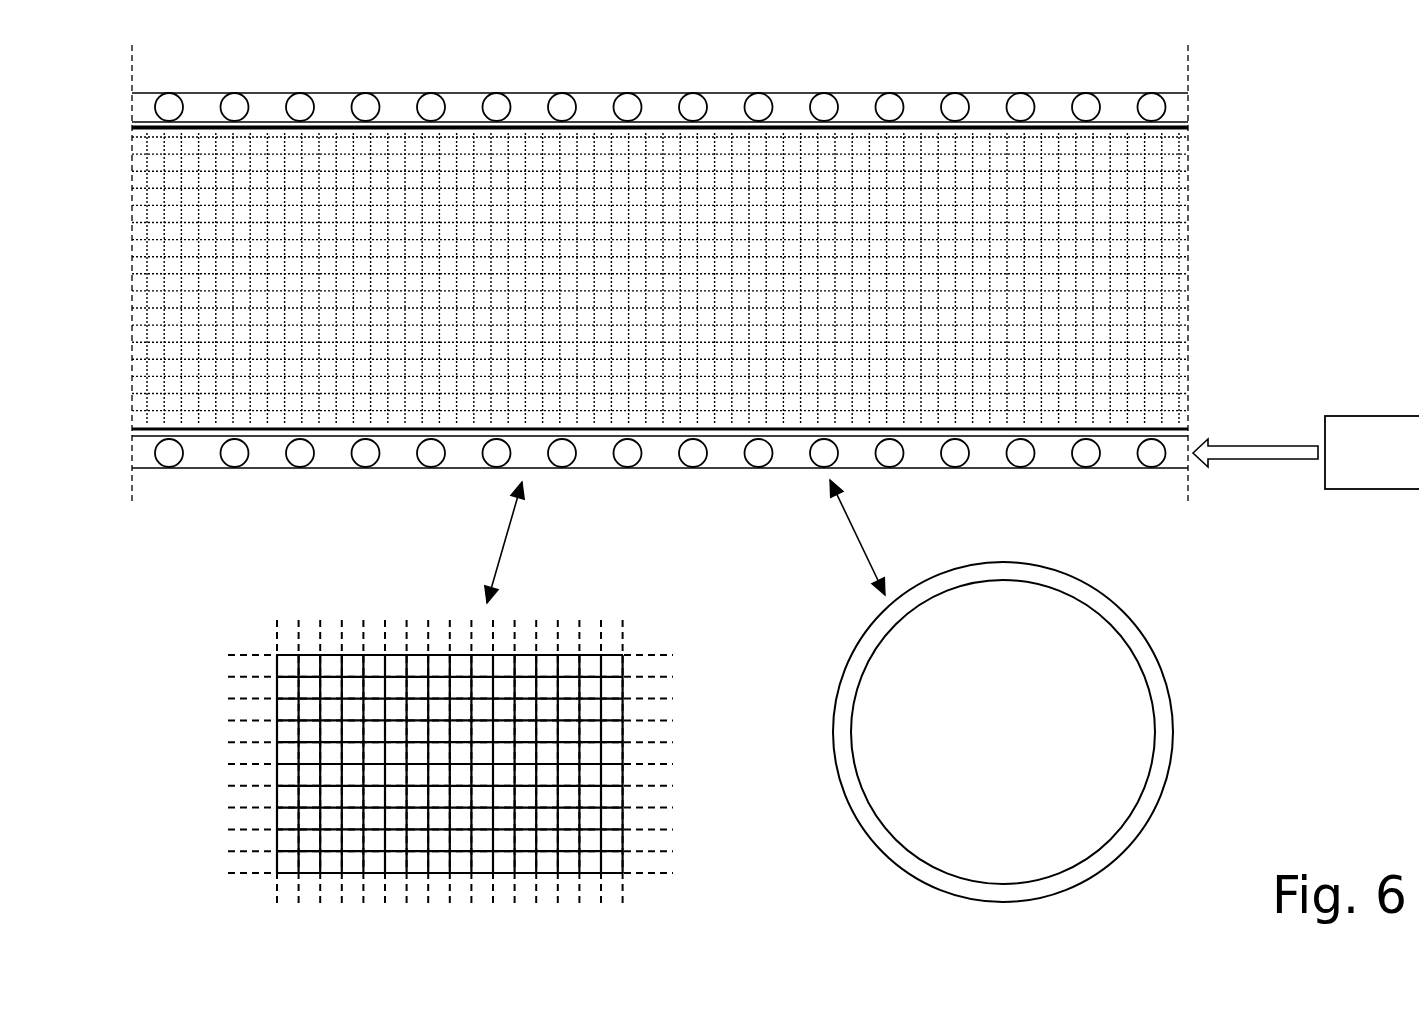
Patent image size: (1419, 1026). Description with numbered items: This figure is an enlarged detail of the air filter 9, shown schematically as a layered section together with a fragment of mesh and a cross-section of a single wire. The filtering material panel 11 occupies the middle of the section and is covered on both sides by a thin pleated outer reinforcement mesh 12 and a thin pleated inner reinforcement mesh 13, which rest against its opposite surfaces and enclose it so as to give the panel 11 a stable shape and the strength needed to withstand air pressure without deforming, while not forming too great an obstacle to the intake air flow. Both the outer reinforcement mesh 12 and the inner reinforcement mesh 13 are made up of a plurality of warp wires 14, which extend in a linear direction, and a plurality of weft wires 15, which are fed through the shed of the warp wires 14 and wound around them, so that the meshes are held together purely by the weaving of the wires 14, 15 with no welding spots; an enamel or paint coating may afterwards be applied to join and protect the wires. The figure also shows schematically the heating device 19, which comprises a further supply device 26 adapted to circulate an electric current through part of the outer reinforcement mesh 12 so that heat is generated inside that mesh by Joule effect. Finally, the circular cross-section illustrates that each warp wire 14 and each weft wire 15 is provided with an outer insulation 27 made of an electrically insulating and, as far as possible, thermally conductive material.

The air filter 9 is at (1077, 732).
The filtering material panel 11 is at (1143, 302).
The outer reinforcement mesh 12 is at (153, 763).
The inner reinforcement mesh 13 is at (703, 70).
The warp wires 14 is at (558, 105).
The weft wires 15 is at (333, 107).
The heating device 19 is at (755, 242).
The supply device 26 is at (1372, 452).
The outer insulation 27 is at (1160, 733).